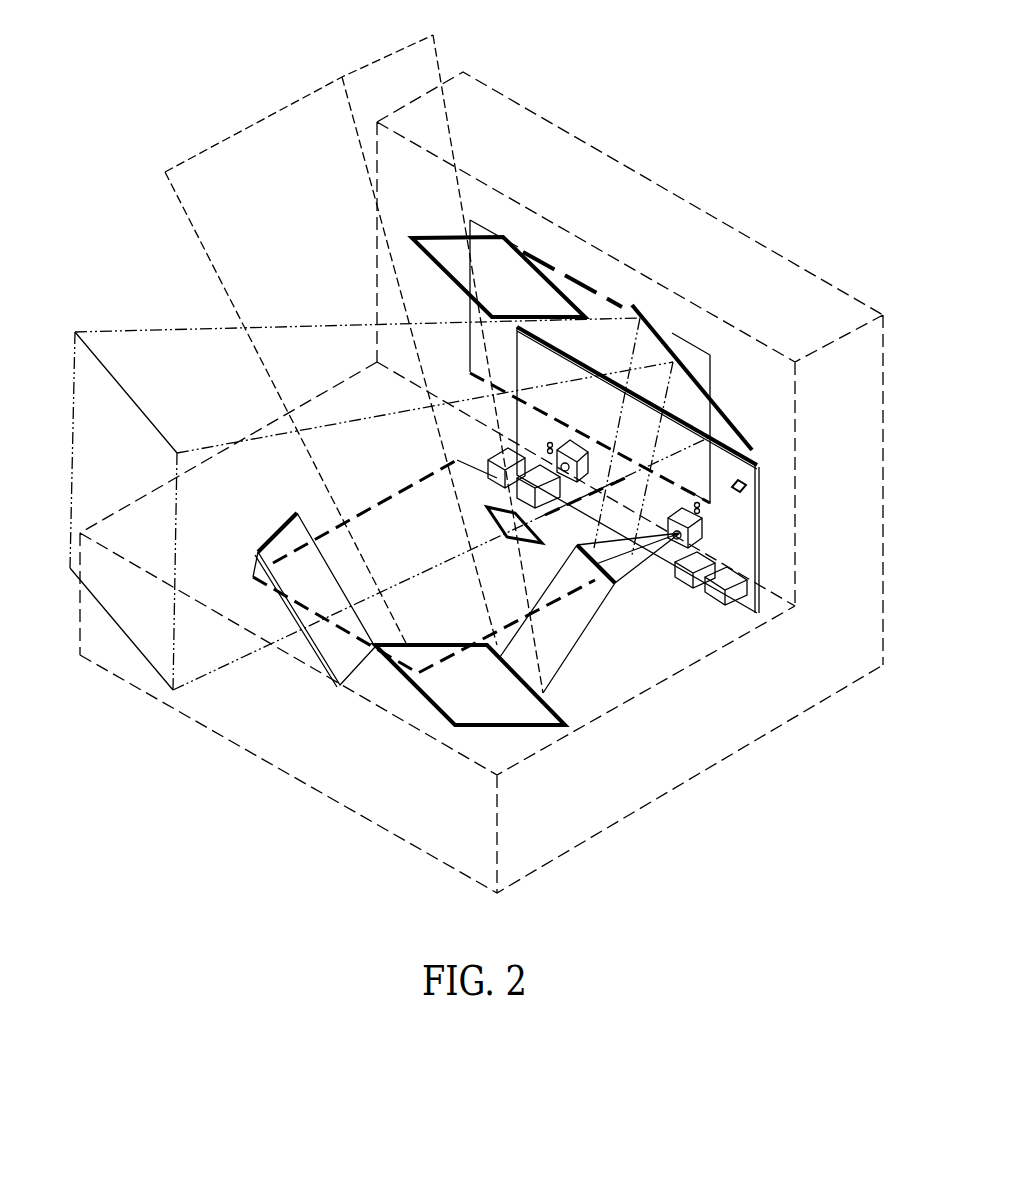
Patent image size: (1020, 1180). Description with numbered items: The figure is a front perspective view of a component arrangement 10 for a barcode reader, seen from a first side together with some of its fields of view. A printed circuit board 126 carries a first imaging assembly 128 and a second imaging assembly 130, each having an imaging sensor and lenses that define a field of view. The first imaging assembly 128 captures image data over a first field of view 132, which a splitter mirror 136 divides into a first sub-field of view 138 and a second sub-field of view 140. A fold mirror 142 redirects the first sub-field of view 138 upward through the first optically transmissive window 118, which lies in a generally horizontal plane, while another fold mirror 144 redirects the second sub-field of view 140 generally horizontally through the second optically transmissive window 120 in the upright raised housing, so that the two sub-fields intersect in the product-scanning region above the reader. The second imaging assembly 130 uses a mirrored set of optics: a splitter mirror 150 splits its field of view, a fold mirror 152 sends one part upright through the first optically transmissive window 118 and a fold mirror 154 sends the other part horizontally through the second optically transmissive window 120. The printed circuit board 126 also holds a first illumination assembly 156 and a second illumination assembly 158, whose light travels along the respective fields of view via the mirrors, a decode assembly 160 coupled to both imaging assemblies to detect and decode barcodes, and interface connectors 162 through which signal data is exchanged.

The component arrangement 10 is at (702, 150).
The first optically transmissive window 118 is at (393, 497).
The second optically transmissive window 120 is at (572, 275).
The printed circuit board 126 is at (757, 477).
The first imaging assembly 128 is at (690, 590).
The second imaging assembly 130 is at (580, 447).
The first field of view 132 is at (640, 563).
The splitter mirror 136 is at (590, 587).
The first sub-field of view 138 is at (553, 658).
The second sub-field of view 140 is at (702, 513).
The fold mirror 142 is at (428, 693).
The fold mirror 144 is at (713, 402).
The splitter mirror 150 is at (497, 523).
The fold mirror 152 is at (273, 532).
The fold mirror 154 is at (438, 237).
The first illumination assembly 156 is at (757, 590).
The second illumination assembly 158 is at (520, 448).
The decode assembly 160 is at (746, 490).
The interface connectors 162 is at (728, 612).